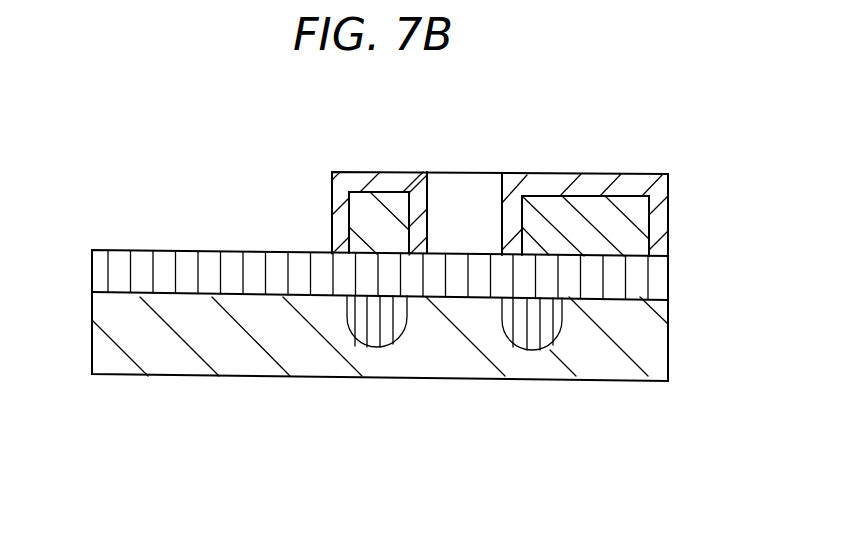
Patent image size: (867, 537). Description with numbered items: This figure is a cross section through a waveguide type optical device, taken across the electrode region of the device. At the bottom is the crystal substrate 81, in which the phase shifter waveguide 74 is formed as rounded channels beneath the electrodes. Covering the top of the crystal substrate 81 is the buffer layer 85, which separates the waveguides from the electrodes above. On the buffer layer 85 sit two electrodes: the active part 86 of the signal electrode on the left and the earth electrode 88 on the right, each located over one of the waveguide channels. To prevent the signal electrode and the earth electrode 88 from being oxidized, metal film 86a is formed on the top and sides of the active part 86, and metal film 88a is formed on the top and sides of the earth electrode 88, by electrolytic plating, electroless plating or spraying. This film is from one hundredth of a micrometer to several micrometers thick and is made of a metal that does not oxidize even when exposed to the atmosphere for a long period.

The phase shifter waveguide 74 is at (527, 330).
The crystal substrate 81 is at (242, 353).
The buffer layer 85 is at (140, 262).
The active part of signal electrode 86 is at (360, 208).
The metal film 86a is at (377, 172).
The earth electrode 88 is at (548, 173).
The metal film 88a is at (648, 175).